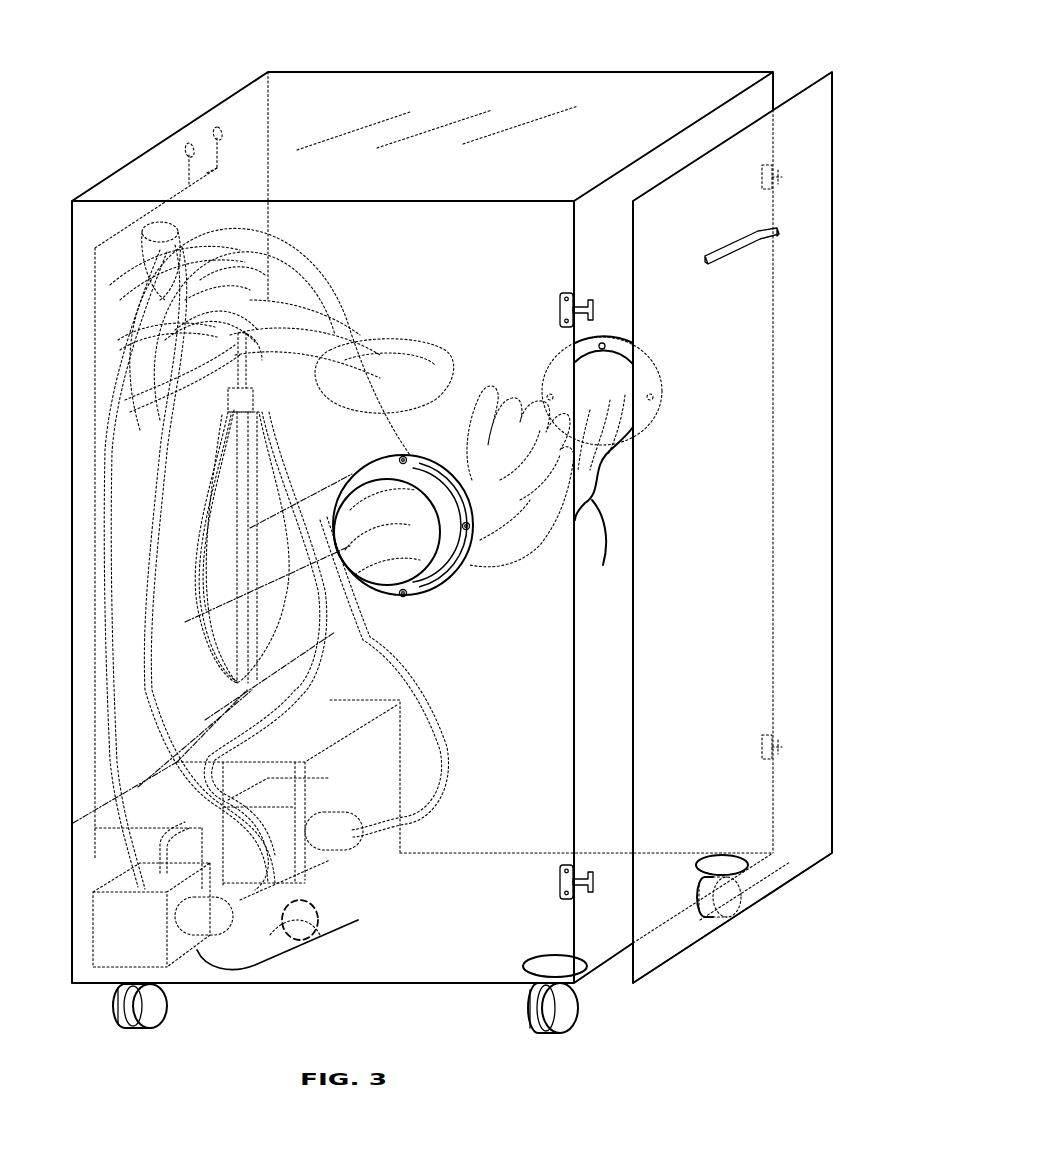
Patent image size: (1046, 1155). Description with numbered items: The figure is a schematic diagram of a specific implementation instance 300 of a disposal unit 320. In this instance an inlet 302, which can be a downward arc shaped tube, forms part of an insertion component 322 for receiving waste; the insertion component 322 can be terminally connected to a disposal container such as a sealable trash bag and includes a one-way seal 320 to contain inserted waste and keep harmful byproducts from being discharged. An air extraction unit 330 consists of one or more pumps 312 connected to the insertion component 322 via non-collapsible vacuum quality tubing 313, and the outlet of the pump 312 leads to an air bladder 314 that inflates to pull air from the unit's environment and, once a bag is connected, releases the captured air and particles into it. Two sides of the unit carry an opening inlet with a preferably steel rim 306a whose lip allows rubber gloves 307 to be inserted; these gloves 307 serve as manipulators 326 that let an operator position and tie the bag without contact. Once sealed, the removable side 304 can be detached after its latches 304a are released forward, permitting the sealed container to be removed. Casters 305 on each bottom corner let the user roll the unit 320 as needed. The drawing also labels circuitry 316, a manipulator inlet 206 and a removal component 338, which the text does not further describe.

The implementation instance 300 is at (789, 24).
The disposal unit 320 is at (553, 72).
The circuitry 316 is at (205, 173).
The inlet 302 is at (150, 248).
The insertion component 322 is at (310, 302).
The tubing 313 is at (122, 550).
The air bladder 314 is at (205, 610).
The rim 306a is at (438, 593).
The manipulator inlet 206 is at (367, 587).
The manipulators 326 is at (497, 543).
The gloves 307 is at (613, 382).
The removable side 304 is at (848, 400).
The latches 304a is at (807, 157).
The pump 312 is at (110, 933).
The air extraction unit 330 is at (252, 683).
The casters 305 is at (148, 1008).
The removal component 338 is at (643, 982).